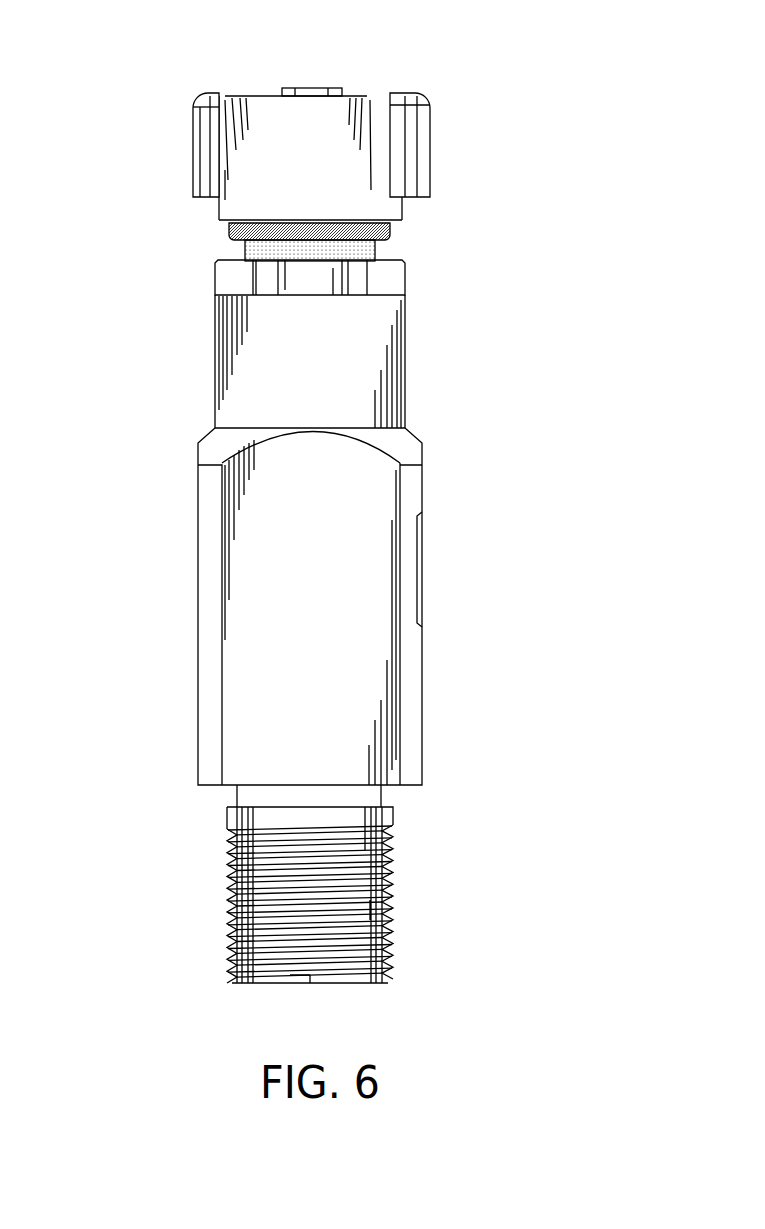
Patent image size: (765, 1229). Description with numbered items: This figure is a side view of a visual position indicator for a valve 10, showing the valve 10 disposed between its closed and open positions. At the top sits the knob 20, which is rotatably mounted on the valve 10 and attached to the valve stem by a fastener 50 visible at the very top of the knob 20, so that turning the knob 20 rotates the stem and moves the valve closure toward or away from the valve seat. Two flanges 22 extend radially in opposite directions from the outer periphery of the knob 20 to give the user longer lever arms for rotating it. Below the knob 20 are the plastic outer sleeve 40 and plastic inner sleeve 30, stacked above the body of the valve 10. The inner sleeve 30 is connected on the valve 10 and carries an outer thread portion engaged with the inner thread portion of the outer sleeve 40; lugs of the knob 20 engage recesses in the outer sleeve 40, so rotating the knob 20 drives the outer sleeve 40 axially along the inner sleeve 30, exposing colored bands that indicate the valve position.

The valve 10 is at (153, 631).
The knob 20 is at (337, 111).
The flanges 22 is at (208, 143).
The inner sleeve 30 is at (405, 245).
The outer sleeve 40 is at (197, 233).
The fastener 50 is at (310, 86).